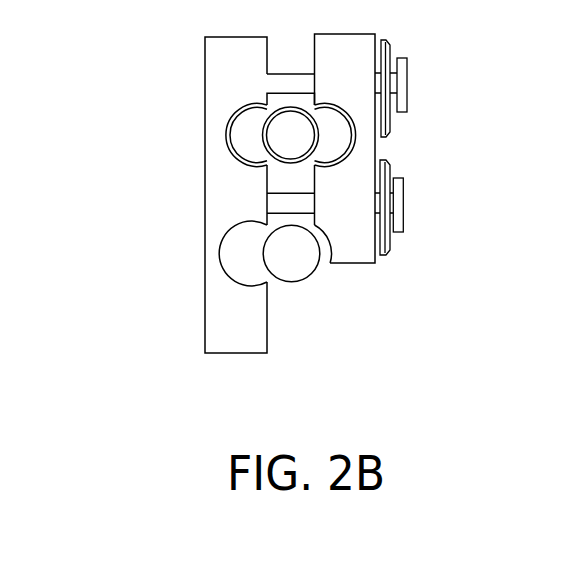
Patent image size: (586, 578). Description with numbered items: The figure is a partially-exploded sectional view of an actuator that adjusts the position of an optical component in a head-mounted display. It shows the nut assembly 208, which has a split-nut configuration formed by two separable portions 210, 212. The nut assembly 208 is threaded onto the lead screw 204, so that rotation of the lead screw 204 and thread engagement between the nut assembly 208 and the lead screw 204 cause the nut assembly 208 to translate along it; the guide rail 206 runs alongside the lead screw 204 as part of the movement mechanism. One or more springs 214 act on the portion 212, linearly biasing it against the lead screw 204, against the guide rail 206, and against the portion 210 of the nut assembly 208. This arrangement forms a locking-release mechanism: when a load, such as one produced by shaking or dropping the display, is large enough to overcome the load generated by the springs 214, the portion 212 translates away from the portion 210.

The lead screw 204 is at (262, 134).
The guide rail 206 is at (303, 280).
The nut assembly 208 is at (121, 69).
The portion of the nut assembly 210 is at (217, 35).
The portion of the nut assembly 212 is at (365, 33).
The springs 214 is at (390, 130).